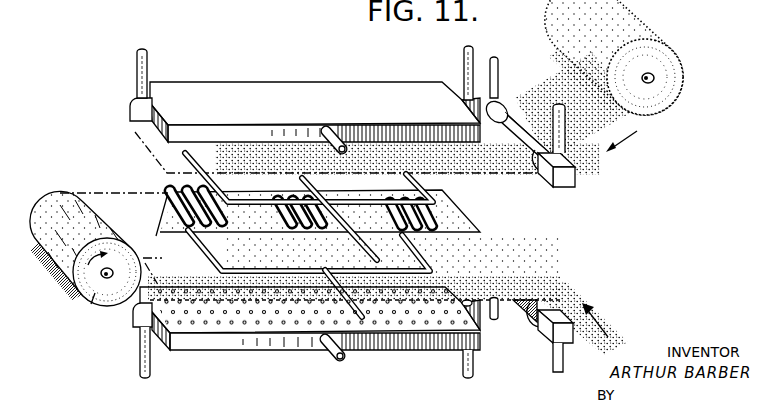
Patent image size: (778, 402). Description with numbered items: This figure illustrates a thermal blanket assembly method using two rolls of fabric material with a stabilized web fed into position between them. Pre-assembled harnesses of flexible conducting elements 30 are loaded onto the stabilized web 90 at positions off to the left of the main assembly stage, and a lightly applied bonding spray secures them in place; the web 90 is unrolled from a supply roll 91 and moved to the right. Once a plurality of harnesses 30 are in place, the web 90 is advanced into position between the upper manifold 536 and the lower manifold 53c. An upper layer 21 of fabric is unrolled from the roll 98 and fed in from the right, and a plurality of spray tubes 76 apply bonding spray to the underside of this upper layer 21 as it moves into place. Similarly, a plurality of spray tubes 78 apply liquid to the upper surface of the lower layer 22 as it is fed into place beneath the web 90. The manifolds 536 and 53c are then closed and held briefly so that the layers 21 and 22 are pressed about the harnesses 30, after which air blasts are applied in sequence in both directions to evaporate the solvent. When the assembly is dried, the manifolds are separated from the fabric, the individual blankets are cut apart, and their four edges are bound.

The upper platen 536 is at (278, 80).
The spray tubes 76 is at (203, 150).
The stabilized web 90 is at (100, 192).
The harness of flexible conducting elements 30 is at (172, 192).
The spray tubes 78 is at (210, 251).
The supply roll 91 is at (97, 292).
The upper layer 21 is at (570, 92).
The roll 98 is at (671, 70).
The lower layer 22 is at (519, 268).
The manifold 53c is at (238, 355).